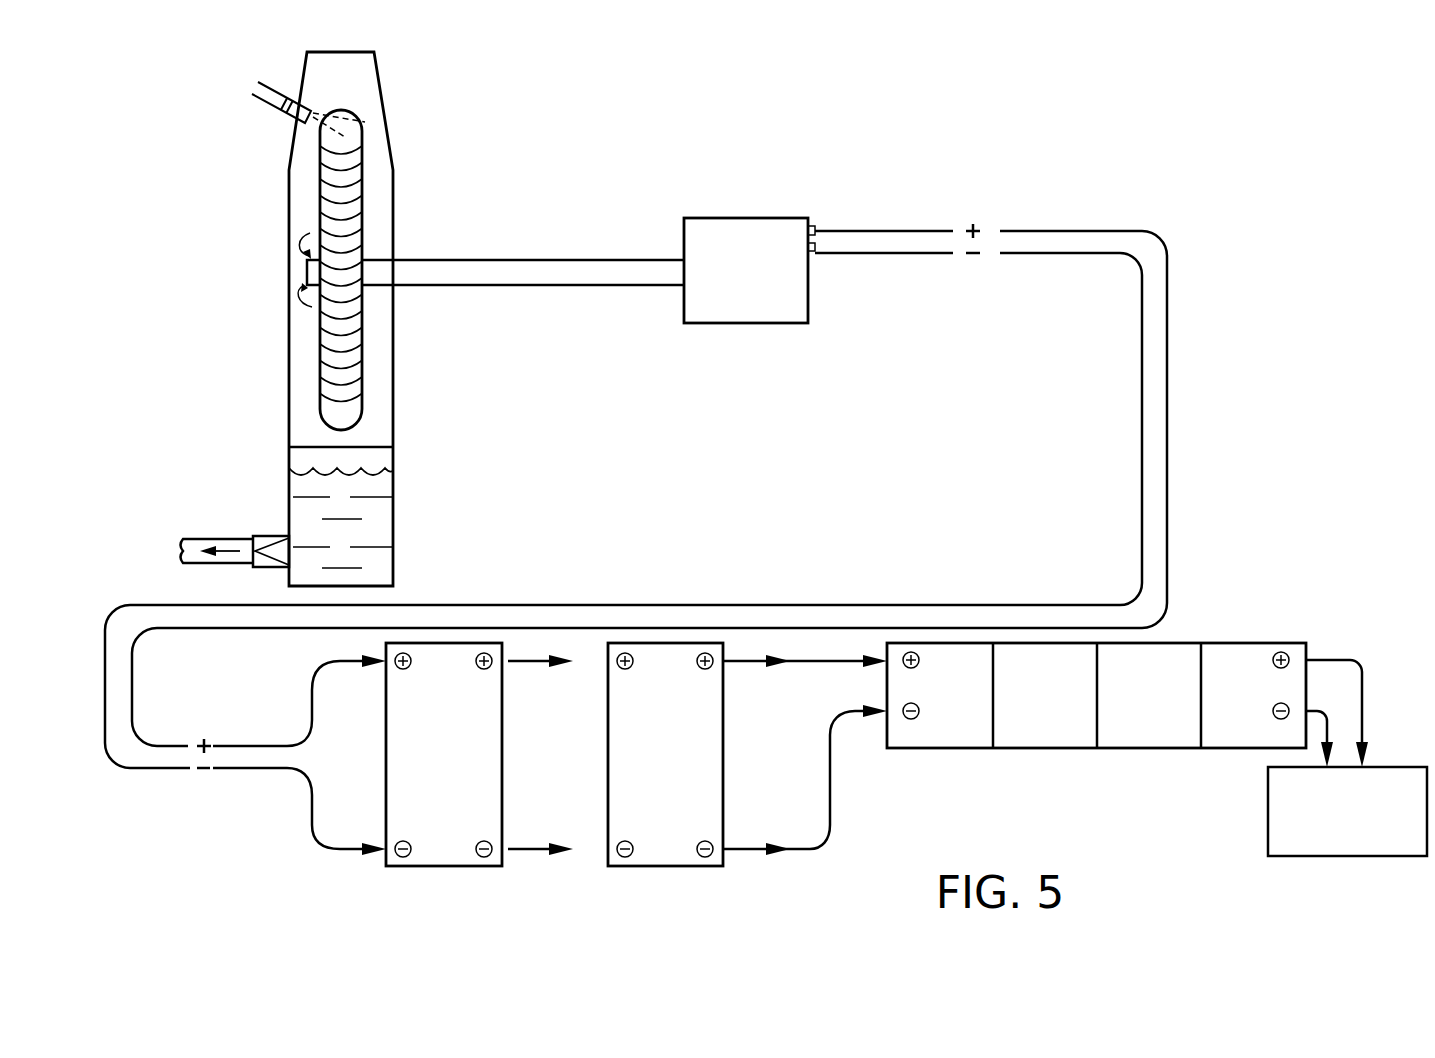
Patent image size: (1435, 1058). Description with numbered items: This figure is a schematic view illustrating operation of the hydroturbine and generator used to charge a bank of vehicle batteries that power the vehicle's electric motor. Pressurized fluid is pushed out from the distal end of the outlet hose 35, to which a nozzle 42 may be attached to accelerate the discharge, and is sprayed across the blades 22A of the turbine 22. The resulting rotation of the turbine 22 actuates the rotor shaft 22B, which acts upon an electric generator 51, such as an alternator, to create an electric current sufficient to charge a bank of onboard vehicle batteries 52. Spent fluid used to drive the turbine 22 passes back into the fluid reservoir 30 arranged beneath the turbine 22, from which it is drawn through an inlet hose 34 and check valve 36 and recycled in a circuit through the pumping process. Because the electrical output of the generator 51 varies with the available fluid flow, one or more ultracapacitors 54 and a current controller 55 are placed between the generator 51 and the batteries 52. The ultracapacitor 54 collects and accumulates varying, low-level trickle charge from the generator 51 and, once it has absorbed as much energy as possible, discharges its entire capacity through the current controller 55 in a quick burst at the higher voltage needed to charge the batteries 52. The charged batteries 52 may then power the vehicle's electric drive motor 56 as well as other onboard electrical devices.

The turbine 22 is at (401, 121).
The blades 22A is at (350, 168).
The rotor shaft 22B is at (593, 266).
The outlet hose 35 is at (268, 86).
The nozzle 42 is at (298, 122).
The fluid supply reservoir 30 is at (393, 523).
The inlet hose 34 is at (198, 538).
The check valve 36 is at (272, 534).
The electric generator 51 is at (760, 218).
The bank of onboard vehicle batteries 52 is at (1223, 648).
The ultracapacitor 54 is at (444, 754).
The current controller 55 is at (665, 754).
The electric drive motor 56 is at (1313, 857).